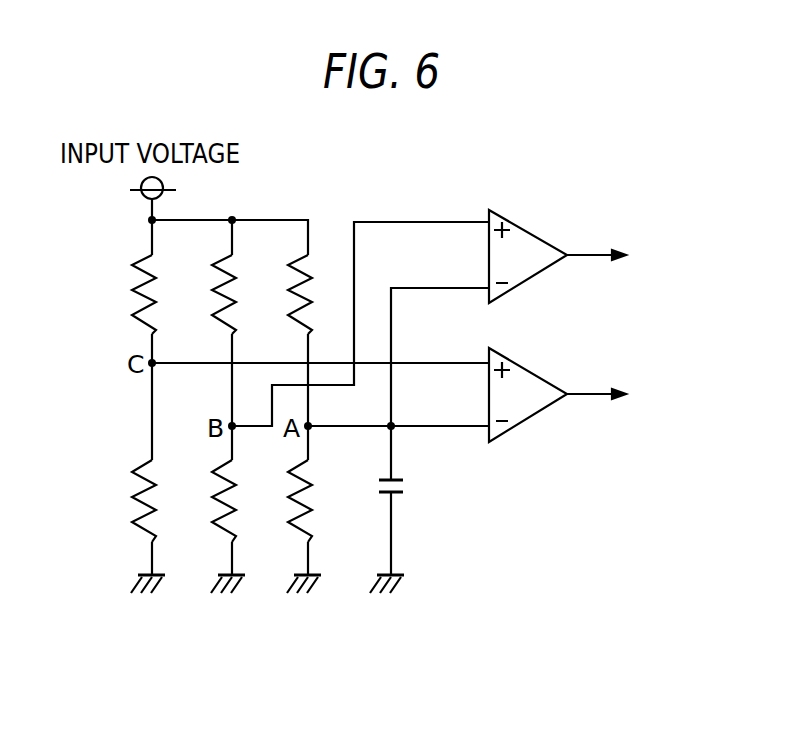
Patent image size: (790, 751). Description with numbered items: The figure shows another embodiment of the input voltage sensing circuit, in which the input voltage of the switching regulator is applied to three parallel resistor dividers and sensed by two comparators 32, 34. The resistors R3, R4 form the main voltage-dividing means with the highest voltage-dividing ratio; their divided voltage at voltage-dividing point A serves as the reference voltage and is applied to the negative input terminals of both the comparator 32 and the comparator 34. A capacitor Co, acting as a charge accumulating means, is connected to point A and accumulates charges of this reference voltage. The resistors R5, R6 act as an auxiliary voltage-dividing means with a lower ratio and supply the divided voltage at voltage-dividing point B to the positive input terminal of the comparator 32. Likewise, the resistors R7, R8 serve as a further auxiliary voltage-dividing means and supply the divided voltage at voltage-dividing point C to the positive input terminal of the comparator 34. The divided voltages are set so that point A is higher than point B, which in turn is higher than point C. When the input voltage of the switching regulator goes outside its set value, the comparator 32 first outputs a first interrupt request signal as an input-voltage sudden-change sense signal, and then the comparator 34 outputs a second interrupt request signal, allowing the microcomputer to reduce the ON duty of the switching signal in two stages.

The comparator 32 is at (522, 222).
The comparator 34 is at (526, 366).
The resistor R3 is at (282, 294).
The resistor R4 is at (282, 501).
The resistor R5 is at (206, 294).
The resistor R6 is at (206, 501).
The resistor R7 is at (127, 294).
The resistor R8 is at (127, 501).
The capacitor Co is at (408, 500).